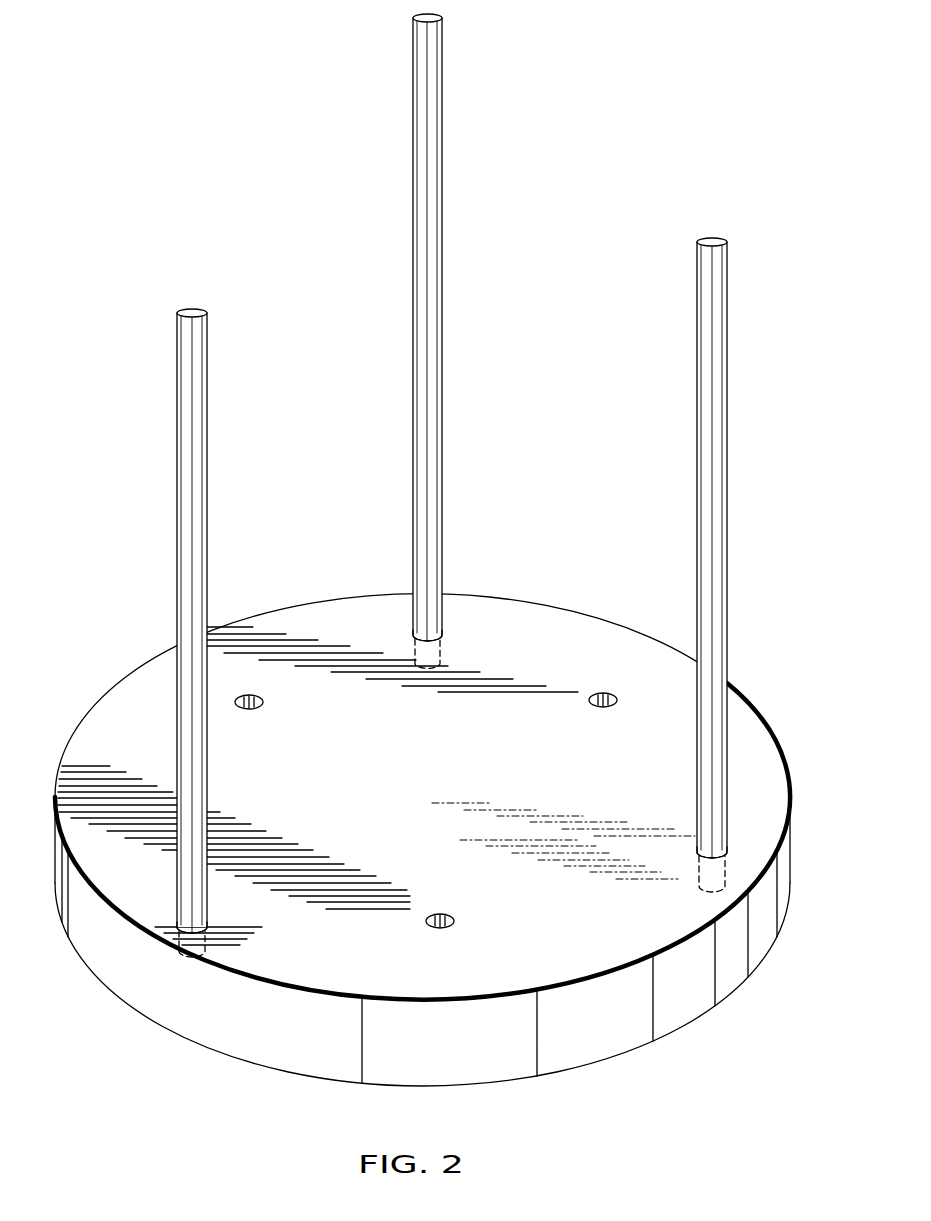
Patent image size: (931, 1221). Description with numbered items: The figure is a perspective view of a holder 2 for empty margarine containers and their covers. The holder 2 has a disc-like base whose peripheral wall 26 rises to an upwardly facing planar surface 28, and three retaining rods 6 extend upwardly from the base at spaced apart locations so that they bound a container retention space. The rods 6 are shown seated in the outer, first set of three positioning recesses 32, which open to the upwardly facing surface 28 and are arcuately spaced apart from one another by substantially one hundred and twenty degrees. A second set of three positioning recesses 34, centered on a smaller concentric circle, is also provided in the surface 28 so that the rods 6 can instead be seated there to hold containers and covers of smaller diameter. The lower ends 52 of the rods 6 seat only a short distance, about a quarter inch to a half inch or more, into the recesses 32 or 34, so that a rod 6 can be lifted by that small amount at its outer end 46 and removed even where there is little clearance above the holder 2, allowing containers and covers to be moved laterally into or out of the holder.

The holder 2 is at (763, 720).
The retaining rods 6 is at (443, 138).
The peripheral wall 26 is at (548, 1060).
The upwardly facing planar surface 28 is at (570, 613).
The positioning recesses 32 is at (416, 629).
The positioning recesses 34 is at (262, 702).
The outer ends 46 is at (424, 18).
The lower ends 52 is at (435, 657).